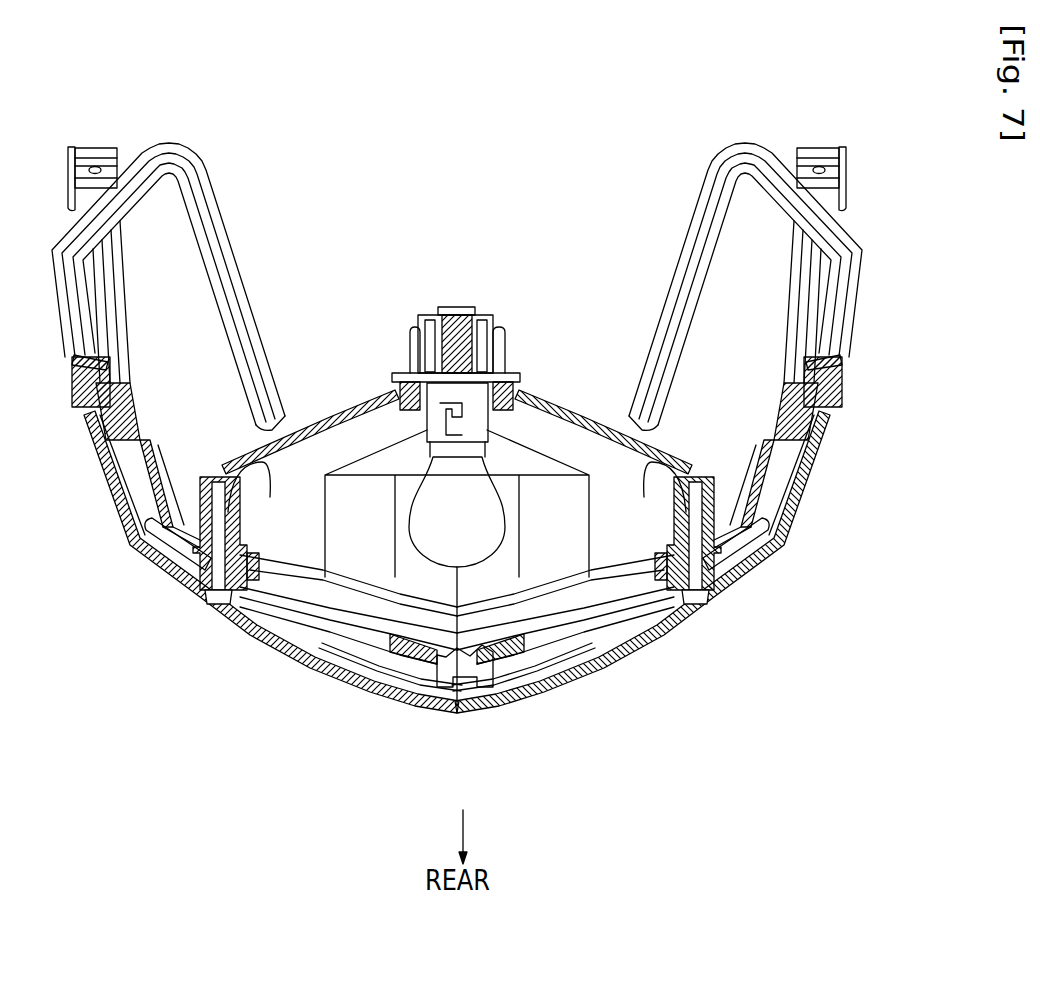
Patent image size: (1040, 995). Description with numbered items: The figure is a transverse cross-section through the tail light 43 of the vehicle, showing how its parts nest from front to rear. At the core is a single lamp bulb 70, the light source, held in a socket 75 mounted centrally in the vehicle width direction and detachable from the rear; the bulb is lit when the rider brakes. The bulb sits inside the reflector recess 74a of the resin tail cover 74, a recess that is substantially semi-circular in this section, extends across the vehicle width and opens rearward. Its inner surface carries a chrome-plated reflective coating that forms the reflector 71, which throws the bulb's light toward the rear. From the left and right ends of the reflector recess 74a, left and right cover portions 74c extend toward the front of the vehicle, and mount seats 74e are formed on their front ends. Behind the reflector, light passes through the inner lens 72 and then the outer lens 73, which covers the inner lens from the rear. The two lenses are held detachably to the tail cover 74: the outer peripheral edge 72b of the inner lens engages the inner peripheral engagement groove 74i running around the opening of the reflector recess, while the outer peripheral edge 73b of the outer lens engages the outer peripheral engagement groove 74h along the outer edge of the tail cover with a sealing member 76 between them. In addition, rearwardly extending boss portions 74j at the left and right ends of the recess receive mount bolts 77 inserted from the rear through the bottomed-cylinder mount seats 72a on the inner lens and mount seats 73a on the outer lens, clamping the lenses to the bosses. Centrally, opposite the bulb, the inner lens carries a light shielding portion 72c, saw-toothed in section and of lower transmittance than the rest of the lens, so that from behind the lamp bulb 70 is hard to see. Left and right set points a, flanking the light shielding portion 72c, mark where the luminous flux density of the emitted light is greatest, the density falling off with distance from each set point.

The tail light 43 is at (818, 517).
The lamp bulb 70 is at (508, 511).
The reflector 71 is at (277, 480).
The inner lens 72 is at (363, 655).
The mount seat 72a is at (258, 610).
The outer peripheral edge 72b is at (780, 423).
The light shielding portion 72c is at (497, 673).
The outer lens 73 is at (598, 677).
The mount seat 73a is at (170, 584).
The outer peripheral edge 73b is at (843, 383).
The tail cover 74 is at (860, 331).
The reflector recess 74a is at (550, 397).
The cover portion 74c is at (215, 197).
The mount seat 74e is at (100, 150).
The outer peripheral engagement groove 74h is at (827, 420).
The inner peripheral engagement groove 74i is at (807, 477).
The boss portion 74j is at (247, 467).
The socket 75 is at (499, 329).
The sealing member 76 is at (847, 373).
The mount bolt 77 is at (212, 607).
The set point a is at (334, 524).